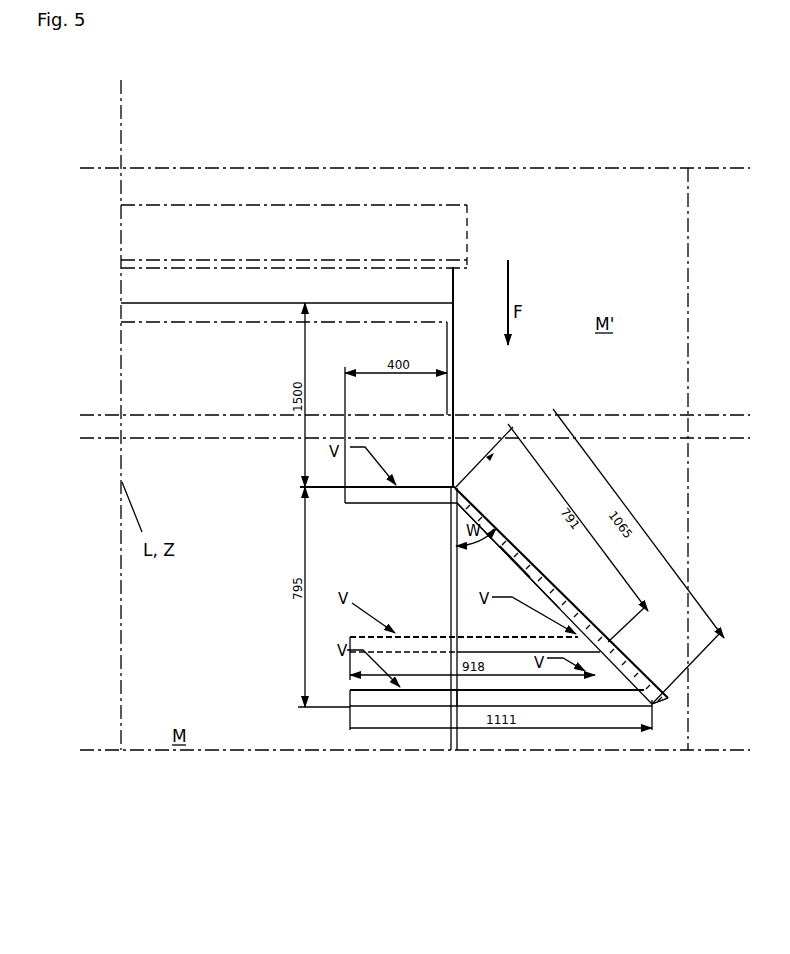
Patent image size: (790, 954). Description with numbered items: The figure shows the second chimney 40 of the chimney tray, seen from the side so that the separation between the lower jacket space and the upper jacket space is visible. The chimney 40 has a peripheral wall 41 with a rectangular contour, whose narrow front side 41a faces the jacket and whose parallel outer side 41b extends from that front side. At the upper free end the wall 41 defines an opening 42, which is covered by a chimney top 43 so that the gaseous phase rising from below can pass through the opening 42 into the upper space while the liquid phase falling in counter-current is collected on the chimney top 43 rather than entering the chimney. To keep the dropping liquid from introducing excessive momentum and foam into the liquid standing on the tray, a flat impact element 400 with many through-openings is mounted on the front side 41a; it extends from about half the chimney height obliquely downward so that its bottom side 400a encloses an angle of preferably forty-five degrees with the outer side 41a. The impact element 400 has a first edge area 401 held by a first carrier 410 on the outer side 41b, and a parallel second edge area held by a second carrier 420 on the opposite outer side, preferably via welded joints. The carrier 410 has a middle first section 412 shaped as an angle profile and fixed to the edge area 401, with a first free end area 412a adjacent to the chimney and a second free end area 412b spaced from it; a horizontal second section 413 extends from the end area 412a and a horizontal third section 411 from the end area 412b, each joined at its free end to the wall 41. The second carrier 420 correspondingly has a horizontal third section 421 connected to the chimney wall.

The second chimney 40 is at (457, 388).
The peripheral wall 41 is at (425, 453).
The front side 41a is at (459, 615).
The outer side 41b is at (413, 345).
The opening 42 is at (239, 300).
The chimney top 43 is at (392, 227).
The flat impact element 400 is at (550, 566).
The bottom side 400a is at (498, 548).
The first edge area 401 is at (612, 570).
The first carrier 410 is at (391, 702).
The third section 411 is at (477, 693).
The first section 412 is at (508, 540).
The first free end area 412a is at (457, 503).
The second free end area 412b is at (648, 690).
The second section 413 is at (385, 492).
The second carrier 420 is at (418, 634).
The third section 421 is at (515, 645).